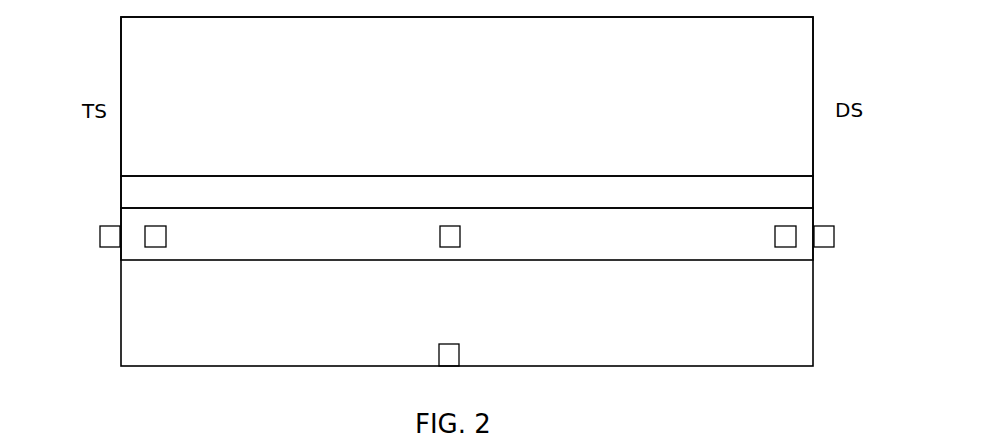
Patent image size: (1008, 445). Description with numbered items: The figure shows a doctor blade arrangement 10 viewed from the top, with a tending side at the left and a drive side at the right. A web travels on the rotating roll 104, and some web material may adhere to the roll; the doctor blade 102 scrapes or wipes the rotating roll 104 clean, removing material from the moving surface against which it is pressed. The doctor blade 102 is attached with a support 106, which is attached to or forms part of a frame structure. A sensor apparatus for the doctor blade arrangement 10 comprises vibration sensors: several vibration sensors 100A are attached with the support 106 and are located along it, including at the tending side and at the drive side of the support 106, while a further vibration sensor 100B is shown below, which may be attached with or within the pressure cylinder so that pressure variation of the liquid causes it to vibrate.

The doctor blade arrangement 10 is at (833, 185).
The doctor blade 102 is at (302, 199).
The rotating roll 104 is at (470, 108).
The support 106 is at (567, 250).
The vibration sensor 100A is at (100, 237).
The vibration sensor 100B is at (449, 344).